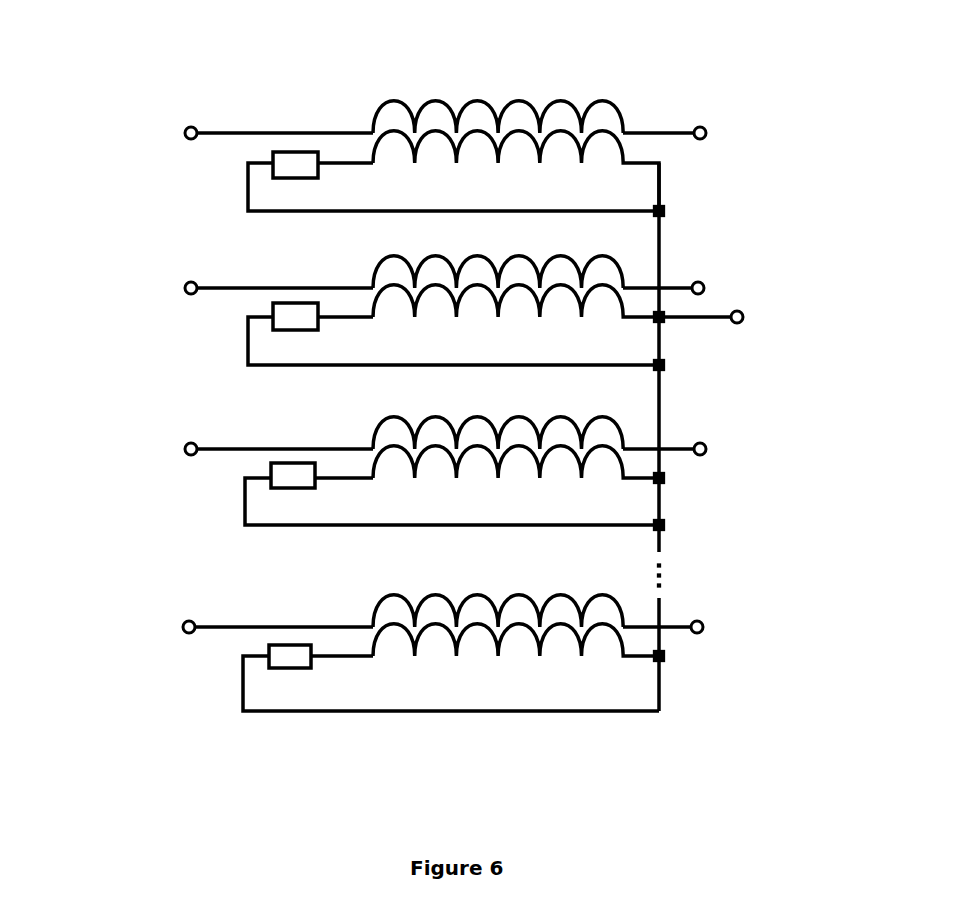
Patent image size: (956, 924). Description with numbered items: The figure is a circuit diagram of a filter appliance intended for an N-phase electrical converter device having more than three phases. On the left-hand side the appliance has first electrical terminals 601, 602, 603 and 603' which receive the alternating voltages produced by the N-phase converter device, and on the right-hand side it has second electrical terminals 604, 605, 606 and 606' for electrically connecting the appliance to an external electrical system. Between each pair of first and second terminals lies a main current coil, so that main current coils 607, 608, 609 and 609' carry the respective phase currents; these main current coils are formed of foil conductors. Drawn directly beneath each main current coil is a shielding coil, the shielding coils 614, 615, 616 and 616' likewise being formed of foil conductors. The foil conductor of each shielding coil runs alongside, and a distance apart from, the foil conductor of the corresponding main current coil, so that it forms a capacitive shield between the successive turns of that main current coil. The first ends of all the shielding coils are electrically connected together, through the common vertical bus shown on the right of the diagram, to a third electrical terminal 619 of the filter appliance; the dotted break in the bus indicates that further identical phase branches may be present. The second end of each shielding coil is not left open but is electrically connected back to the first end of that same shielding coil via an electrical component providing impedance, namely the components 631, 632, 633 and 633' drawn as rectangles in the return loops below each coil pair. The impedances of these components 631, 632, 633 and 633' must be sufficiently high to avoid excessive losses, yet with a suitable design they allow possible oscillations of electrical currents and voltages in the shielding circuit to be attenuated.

The first electrical terminal 601 is at (185, 133).
The first electrical terminal 602 is at (185, 288).
The first electrical terminal 603 is at (235, 449).
The first electrical terminal 603' is at (229, 627).
The second electrical terminal 604 is at (706, 133).
The second electrical terminal 605 is at (704, 288).
The second electrical terminal 606 is at (708, 449).
The second electrical terminal 606' is at (711, 629).
The third electrical terminal 619 is at (743, 317).
The main current coil 607 is at (472, 100).
The main current coil 608 is at (477, 257).
The main current coil 609 is at (498, 412).
The main current coil 609' is at (498, 591).
The shielding coil 614 is at (481, 133).
The shielding coil 615 is at (490, 292).
The shielding coil 616 is at (516, 483).
The shielding coil 616' is at (516, 662).
The electrical component providing impedance 631 is at (292, 178).
The electrical component providing impedance 632 is at (292, 330).
The electrical component providing impedance 633 is at (452, 494).
The electrical component providing impedance 633' is at (451, 678).